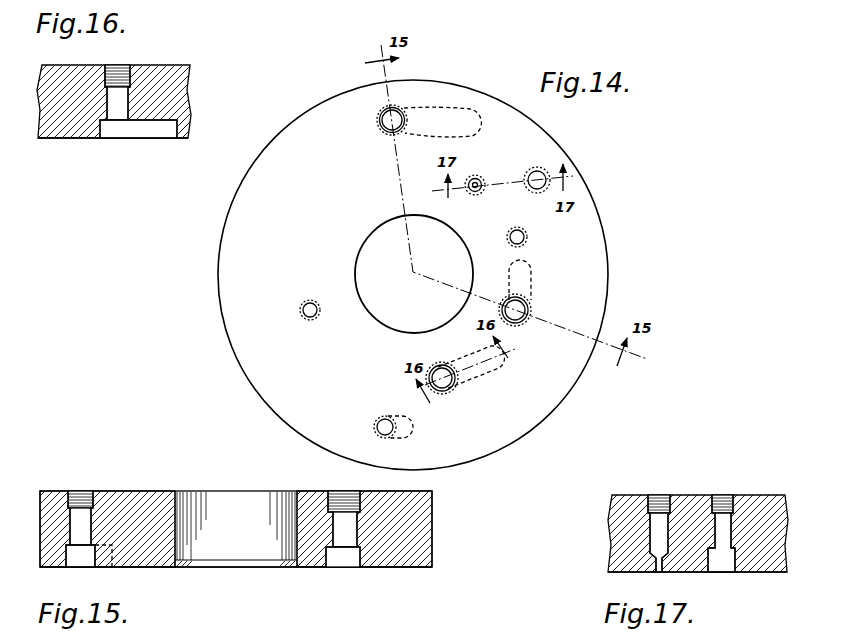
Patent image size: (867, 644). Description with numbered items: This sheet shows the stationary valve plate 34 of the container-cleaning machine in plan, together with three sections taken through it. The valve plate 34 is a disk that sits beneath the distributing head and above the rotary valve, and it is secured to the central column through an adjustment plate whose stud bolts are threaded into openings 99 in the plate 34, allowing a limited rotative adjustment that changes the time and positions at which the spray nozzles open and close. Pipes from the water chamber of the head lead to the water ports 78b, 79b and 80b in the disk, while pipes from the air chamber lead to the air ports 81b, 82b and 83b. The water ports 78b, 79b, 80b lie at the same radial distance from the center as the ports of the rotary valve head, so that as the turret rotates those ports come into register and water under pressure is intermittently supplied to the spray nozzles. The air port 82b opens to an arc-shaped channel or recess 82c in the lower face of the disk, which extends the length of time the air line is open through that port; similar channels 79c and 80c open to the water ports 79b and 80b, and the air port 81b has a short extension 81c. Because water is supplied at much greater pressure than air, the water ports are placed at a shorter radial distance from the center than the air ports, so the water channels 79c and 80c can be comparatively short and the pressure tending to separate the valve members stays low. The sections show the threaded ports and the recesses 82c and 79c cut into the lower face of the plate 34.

In FIG. 14, the stationary valve plate 34 is at (590, 229).
In FIG. 15, the stationary valve plate 34 is at (136, 497).
In FIG. 14, the air port 82b is at (379, 120).
In FIG. 15, the air port 82b is at (85, 490).
In FIG. 14, the arc-shaped channel 82c is at (465, 116).
In FIG. 15, the arc-shaped channel 82c is at (82, 558).
In FIG. 14, the water port 78b is at (480, 190).
In FIG. 17, the water port 78b is at (660, 495).
In FIG. 14, the air port 83b is at (531, 172).
In FIG. 17, the air port 83b is at (727, 495).
In FIG. 14, the threaded opening 99 is at (525, 237).
In FIG. 14, the water port 79b is at (527, 306).
In FIG. 15, the water port 79b is at (340, 491).
In FIG. 14, the water channel 79c is at (532, 273).
In FIG. 15, the water channel 79c is at (347, 560).
In FIG. 14, the water port 80b is at (457, 383).
In FIG. 16, the water port 80b is at (125, 68).
In FIG. 14, the water channel 80c is at (497, 358).
In FIG. 16, the water channel 80c is at (145, 133).
In FIG. 14, the air port 81b is at (385, 418).
In FIG. 14, the short extension 81c is at (407, 428).